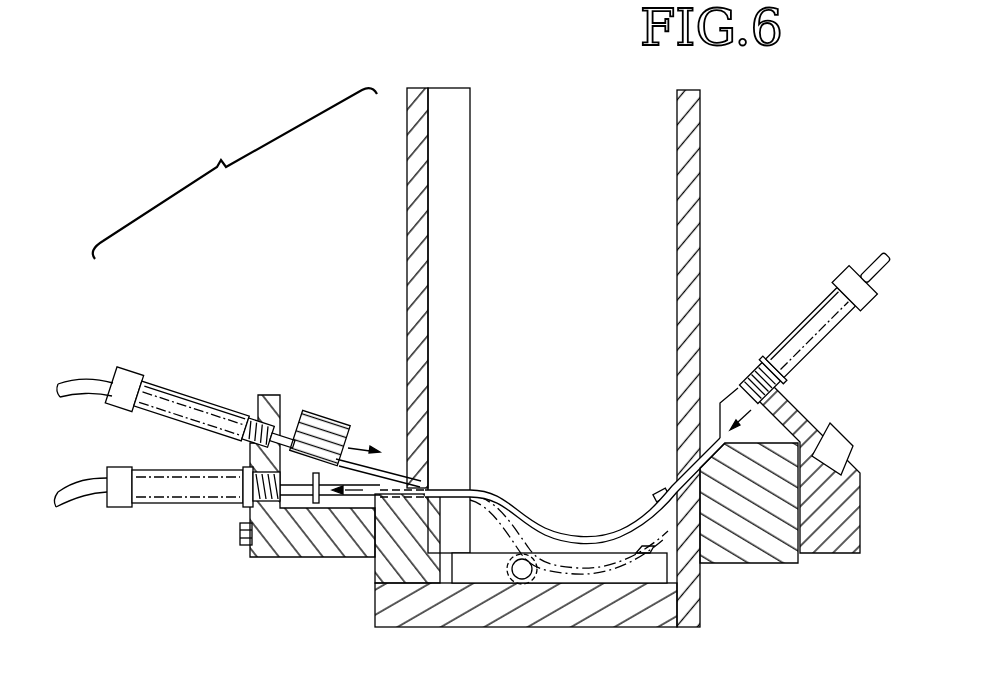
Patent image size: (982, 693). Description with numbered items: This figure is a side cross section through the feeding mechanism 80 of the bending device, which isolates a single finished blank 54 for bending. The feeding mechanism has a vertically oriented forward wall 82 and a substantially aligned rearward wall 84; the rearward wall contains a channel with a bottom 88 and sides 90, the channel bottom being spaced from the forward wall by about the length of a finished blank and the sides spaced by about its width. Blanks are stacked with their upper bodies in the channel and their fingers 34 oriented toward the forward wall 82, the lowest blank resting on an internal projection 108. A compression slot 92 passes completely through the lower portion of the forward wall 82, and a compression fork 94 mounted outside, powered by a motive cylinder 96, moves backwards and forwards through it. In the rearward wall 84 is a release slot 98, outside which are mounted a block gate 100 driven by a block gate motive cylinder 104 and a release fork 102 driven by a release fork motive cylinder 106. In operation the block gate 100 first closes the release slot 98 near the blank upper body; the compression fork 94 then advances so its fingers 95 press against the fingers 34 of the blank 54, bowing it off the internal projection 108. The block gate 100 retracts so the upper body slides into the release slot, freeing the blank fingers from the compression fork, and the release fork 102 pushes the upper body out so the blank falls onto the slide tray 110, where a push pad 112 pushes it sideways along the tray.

The feeding mechanism 80 is at (235, 173).
The forward wall 82 is at (713, 142).
The rearward wall 84 is at (437, 308).
The bottom 88 is at (434, 98).
The sides 90 is at (454, 124).
The compression slot 92 is at (729, 518).
The compression fork 94 is at (727, 381).
The fingers 95 is at (712, 493).
The motive cylinder 96 is at (817, 295).
The release slot 98 is at (414, 506).
The block gate 100 is at (335, 515).
The release fork 102 is at (330, 397).
The block gate motive cylinder 104 is at (163, 514).
The release fork motive cylinder 106 is at (192, 382).
The internal projection 108 is at (661, 538).
The slide tray 110 is at (480, 601).
The push pad 112 is at (526, 591).
The finished blank 54 is at (523, 487).
The fingers 34 is at (637, 494).